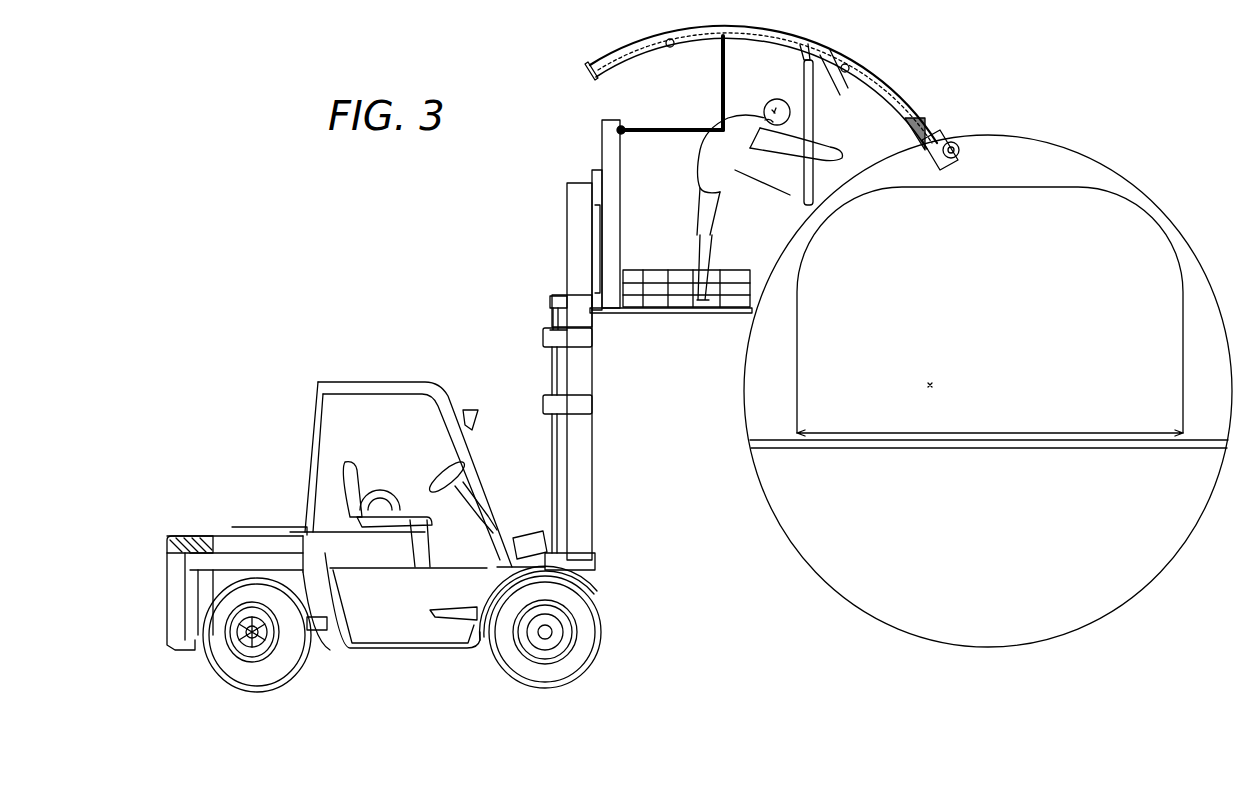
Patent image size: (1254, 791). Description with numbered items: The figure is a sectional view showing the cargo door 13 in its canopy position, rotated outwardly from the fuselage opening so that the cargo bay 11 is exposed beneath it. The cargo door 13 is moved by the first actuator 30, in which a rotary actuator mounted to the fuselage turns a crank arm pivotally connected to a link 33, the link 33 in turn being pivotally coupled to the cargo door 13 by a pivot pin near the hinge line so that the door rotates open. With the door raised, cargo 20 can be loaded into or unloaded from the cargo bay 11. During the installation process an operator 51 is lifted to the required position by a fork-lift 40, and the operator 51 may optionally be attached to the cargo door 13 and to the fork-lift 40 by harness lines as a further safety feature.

The cargo bay 11 is at (781, 390).
The cargo door 13 is at (597, 80).
The cargo 20 is at (1076, 253).
The first actuator 30 is at (953, 181).
The link 33 is at (795, 52).
The fork-lift 40 is at (500, 272).
The operator 51 is at (740, 152).